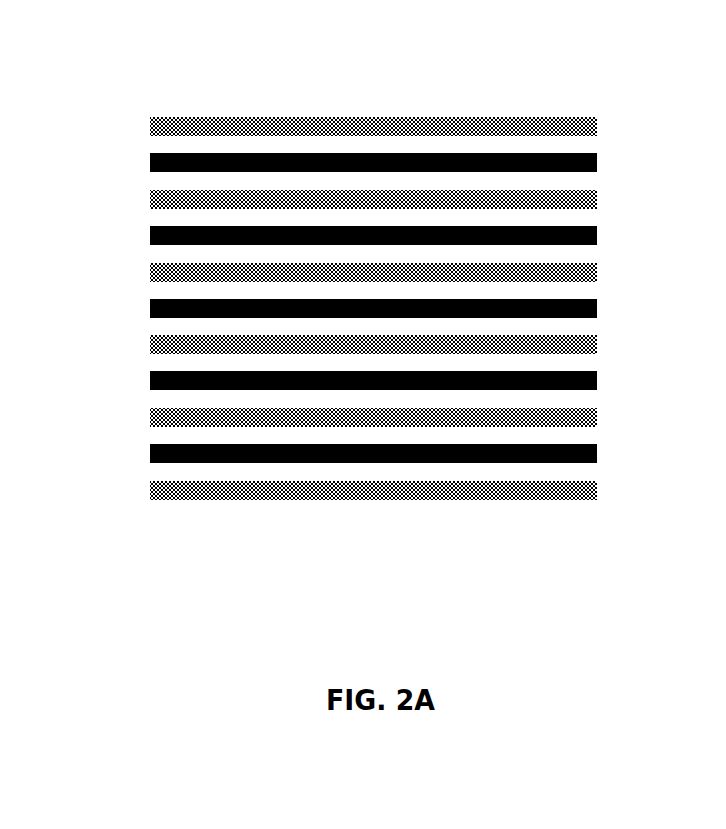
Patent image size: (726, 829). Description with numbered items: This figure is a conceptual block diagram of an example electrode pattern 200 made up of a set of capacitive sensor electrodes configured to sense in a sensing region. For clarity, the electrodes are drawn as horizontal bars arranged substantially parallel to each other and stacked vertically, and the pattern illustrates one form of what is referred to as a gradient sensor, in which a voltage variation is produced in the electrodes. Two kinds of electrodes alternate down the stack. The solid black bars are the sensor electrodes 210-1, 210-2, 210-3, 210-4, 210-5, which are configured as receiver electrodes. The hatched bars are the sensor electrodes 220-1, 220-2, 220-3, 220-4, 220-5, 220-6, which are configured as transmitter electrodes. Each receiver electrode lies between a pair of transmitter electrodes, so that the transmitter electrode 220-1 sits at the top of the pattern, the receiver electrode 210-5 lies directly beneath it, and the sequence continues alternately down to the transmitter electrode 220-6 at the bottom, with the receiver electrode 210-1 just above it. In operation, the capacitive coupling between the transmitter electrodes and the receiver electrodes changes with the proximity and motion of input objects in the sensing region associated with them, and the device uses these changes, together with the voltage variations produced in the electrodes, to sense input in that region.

The electrode pattern 200 is at (306, 31).
The sensor electrode 210-1 is at (597, 451).
The sensor electrode 210-2 is at (597, 378).
The sensor electrode 210-3 is at (597, 306).
The sensor electrode 210-4 is at (597, 233).
The sensor electrode 210-5 is at (597, 160).
The sensor electrode 220-1 is at (150, 131).
The sensor electrode 220-2 is at (150, 204).
The sensor electrode 220-3 is at (150, 277).
The sensor electrode 220-4 is at (150, 349).
The sensor electrode 220-5 is at (150, 422).
The sensor electrode 220-6 is at (150, 495).